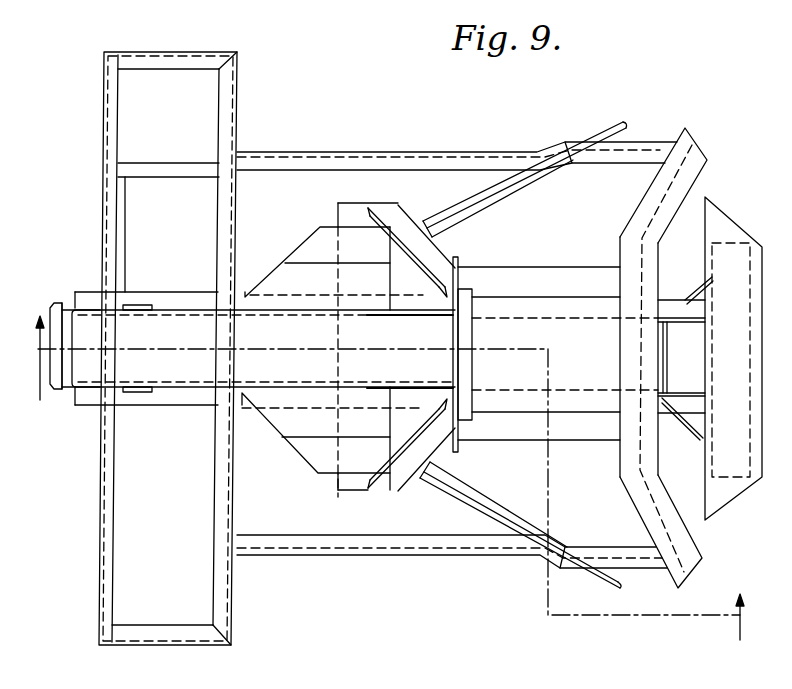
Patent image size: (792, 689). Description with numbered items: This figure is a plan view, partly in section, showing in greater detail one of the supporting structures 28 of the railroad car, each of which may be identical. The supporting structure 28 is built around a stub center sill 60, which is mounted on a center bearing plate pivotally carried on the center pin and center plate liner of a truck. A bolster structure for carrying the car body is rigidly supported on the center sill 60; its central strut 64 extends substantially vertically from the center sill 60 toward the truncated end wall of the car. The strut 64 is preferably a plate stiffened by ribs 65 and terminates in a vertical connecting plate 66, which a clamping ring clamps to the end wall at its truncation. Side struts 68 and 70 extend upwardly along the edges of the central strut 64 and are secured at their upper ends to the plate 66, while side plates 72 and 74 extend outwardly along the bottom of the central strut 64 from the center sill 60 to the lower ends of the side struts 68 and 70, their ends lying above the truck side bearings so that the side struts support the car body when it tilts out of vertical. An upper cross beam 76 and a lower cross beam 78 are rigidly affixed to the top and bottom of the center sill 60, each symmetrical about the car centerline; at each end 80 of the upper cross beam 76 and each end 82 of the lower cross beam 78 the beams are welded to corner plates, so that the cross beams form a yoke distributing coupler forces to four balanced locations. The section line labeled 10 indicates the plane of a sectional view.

The section line 10- 10 is at (389, 478).
The supporting structure 28 is at (334, 143).
The stub center sill 60 is at (586, 360).
The central strut 64 is at (434, 348).
The ribs 65 is at (376, 382).
The vertical connecting plate 66 is at (457, 263).
The side strut 68 is at (440, 233).
The side strut 70 is at (437, 464).
The side plate 72 is at (338, 205).
The side plate 74 is at (337, 491).
The upper cross beam 76 is at (646, 360).
The lower cross beam 78 is at (738, 350).
The end of upper cross beam 80 is at (703, 148).
The end of lower cross beam 82 is at (727, 212).